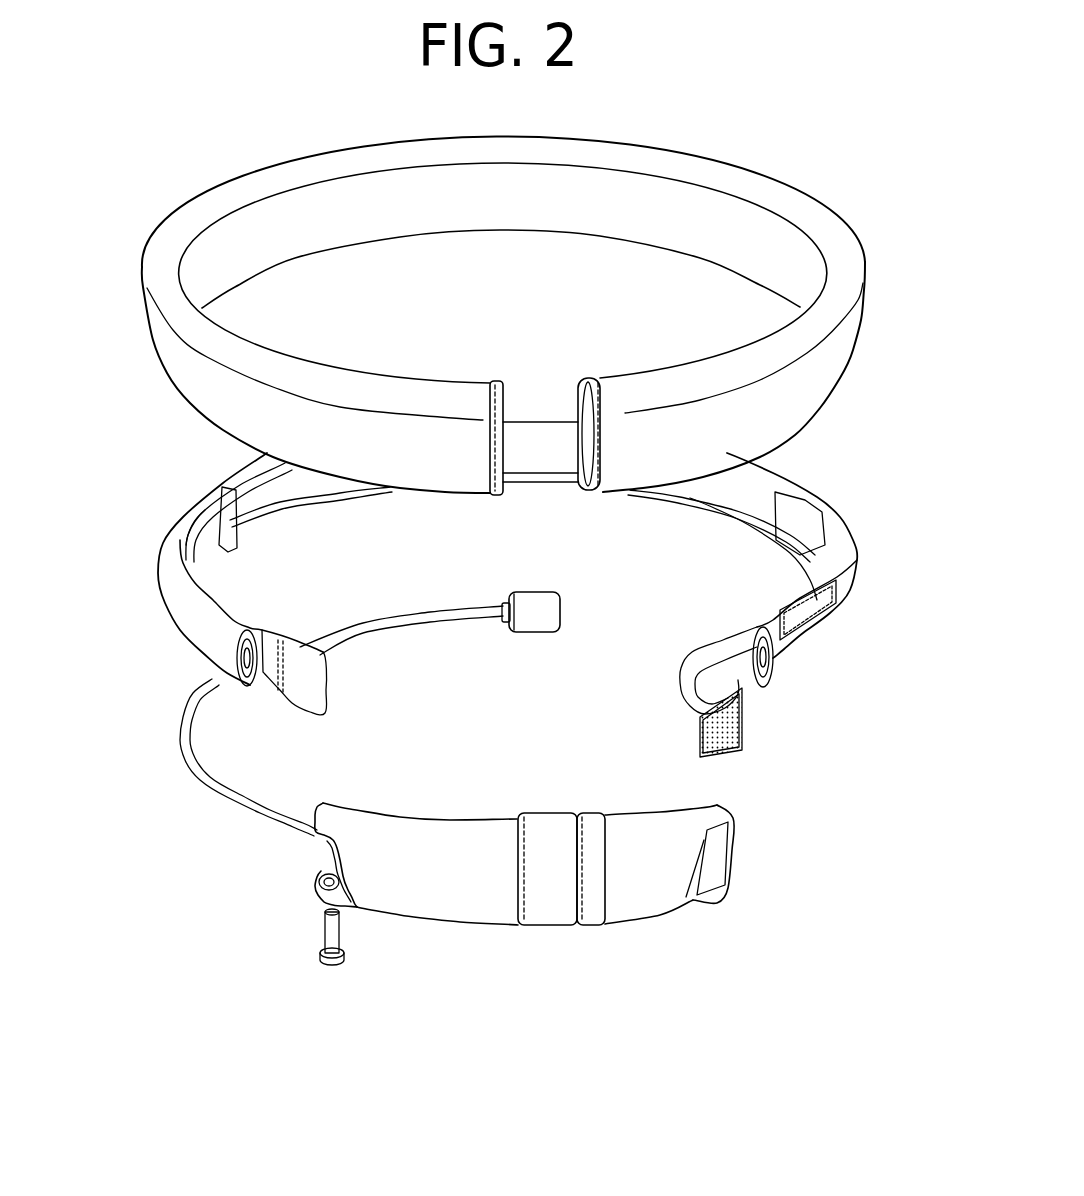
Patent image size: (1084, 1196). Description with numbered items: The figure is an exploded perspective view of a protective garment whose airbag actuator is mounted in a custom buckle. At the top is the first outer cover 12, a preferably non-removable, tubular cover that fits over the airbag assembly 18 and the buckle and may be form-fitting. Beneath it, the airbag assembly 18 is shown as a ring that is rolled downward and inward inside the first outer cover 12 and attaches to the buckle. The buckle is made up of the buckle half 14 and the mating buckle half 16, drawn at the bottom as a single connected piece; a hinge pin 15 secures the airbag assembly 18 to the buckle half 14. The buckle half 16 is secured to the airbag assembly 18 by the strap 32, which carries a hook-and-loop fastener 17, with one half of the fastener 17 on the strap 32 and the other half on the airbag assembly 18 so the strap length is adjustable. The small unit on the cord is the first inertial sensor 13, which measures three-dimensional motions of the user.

The first outer cover 12 is at (823, 376).
The first inertial sensor 13 is at (561, 612).
The buckle half 14 is at (449, 830).
The hinge pin 15 is at (322, 928).
The mating buckle half 16 is at (657, 822).
The hook-and-loop fastener 17 is at (815, 621).
The airbag assembly 18 is at (175, 595).
The strap 32 is at (272, 500).